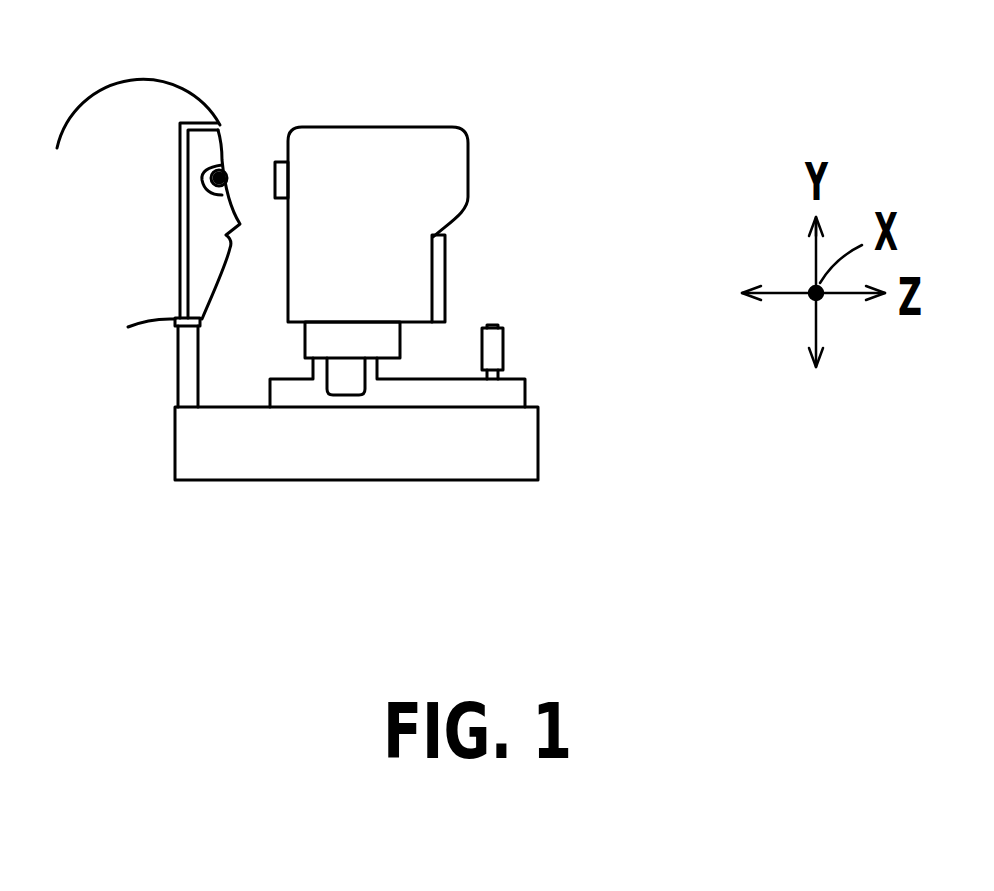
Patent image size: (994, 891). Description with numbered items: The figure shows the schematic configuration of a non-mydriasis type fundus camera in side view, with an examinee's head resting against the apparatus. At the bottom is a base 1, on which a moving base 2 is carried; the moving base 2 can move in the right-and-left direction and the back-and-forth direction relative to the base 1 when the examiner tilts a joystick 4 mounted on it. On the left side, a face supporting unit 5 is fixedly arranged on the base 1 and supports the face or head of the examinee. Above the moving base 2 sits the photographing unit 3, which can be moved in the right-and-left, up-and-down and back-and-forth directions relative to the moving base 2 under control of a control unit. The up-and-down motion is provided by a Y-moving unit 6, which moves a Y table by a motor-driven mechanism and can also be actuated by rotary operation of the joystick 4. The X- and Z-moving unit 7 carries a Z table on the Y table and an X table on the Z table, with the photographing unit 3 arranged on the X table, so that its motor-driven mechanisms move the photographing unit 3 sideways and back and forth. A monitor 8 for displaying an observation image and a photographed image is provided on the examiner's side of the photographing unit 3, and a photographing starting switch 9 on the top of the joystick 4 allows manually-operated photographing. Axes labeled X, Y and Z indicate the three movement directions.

The base 1 is at (433, 463).
The moving base 2 is at (510, 397).
The photographing unit 3 is at (395, 142).
The joystick 4 is at (503, 340).
The face supporting unit 5 is at (135, 343).
The Y-moving unit 6 is at (342, 387).
The X- and Z-moving unit 7 is at (383, 337).
The monitor 8 is at (435, 263).
The photographing starting switch 9 is at (497, 326).